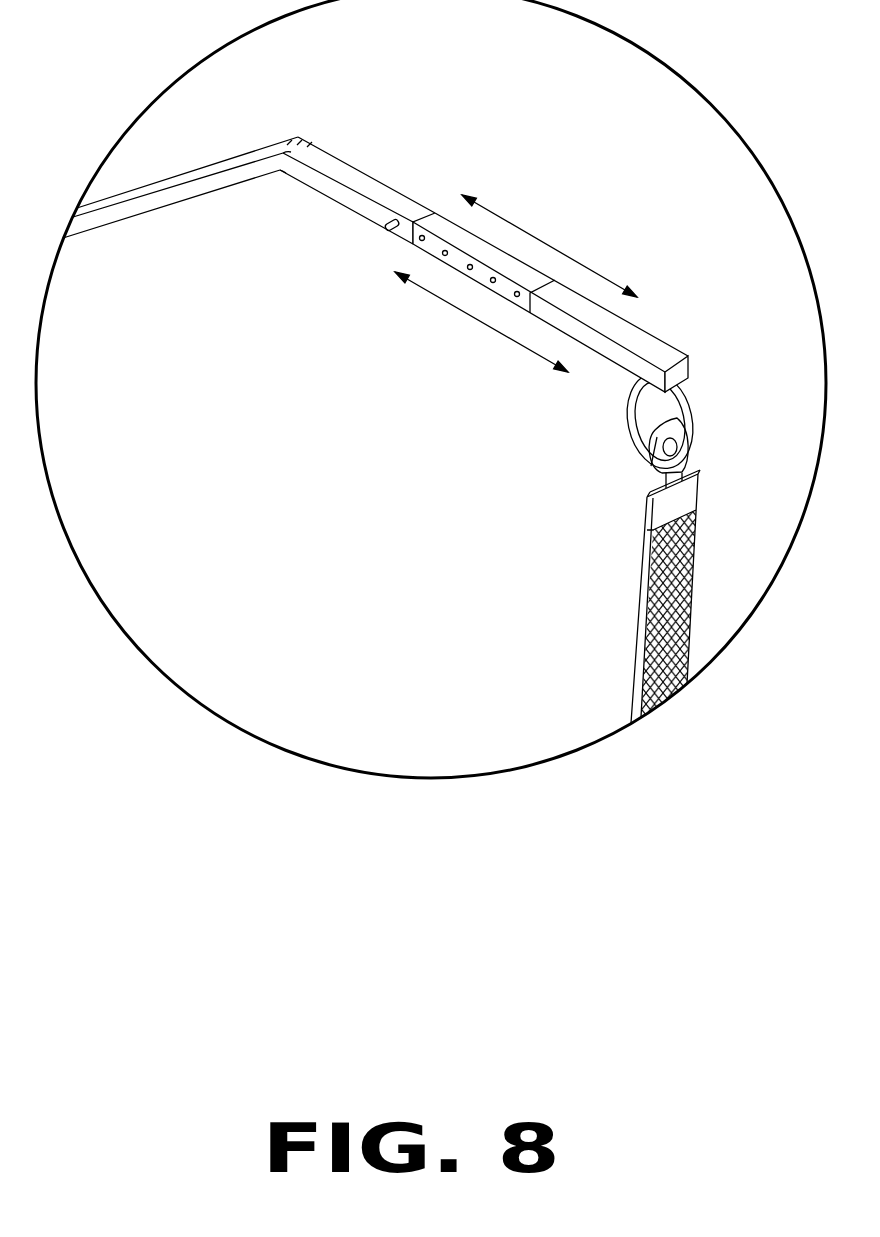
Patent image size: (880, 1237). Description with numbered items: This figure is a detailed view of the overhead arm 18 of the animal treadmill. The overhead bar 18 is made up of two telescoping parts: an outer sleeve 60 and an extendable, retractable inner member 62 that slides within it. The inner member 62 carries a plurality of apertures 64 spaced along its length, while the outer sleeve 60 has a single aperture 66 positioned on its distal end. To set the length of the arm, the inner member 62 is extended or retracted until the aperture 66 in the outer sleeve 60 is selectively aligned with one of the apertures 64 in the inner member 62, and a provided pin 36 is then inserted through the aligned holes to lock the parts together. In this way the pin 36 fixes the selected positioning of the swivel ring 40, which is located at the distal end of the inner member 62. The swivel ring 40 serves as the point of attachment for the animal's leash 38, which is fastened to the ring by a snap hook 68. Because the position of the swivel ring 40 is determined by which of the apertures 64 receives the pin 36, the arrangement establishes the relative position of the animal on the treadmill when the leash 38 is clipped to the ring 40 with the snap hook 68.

The overhead arm 18 is at (483, 245).
The pin 36 is at (390, 232).
The leash 38 is at (640, 645).
The swivel ring 40 is at (627, 395).
The outer sleeve 60 is at (297, 135).
The inner member 62 is at (435, 213).
The apertures 64 is at (445, 257).
The aperture 66 is at (325, 212).
The snap hook 68 is at (643, 447).